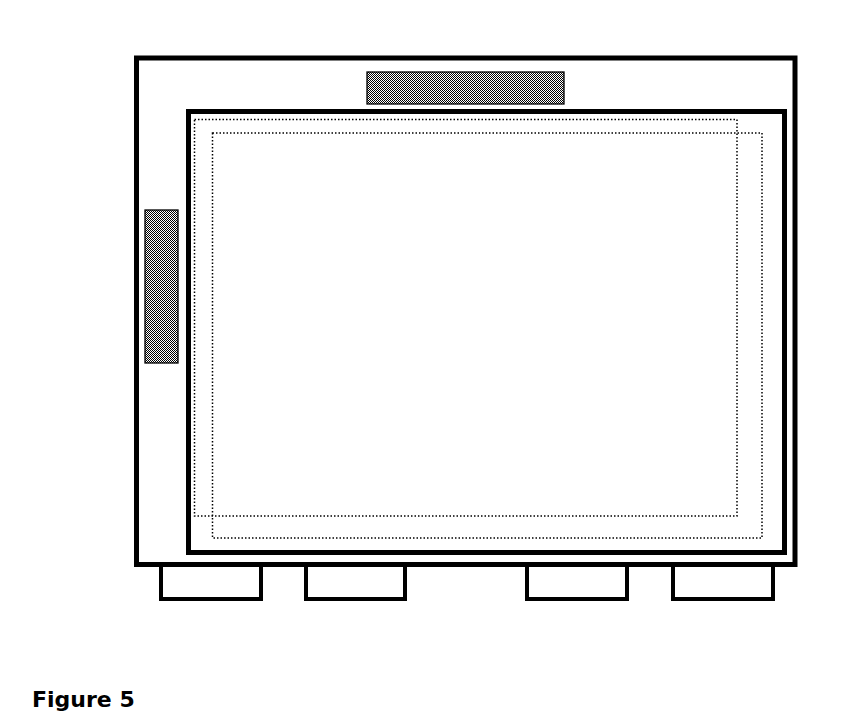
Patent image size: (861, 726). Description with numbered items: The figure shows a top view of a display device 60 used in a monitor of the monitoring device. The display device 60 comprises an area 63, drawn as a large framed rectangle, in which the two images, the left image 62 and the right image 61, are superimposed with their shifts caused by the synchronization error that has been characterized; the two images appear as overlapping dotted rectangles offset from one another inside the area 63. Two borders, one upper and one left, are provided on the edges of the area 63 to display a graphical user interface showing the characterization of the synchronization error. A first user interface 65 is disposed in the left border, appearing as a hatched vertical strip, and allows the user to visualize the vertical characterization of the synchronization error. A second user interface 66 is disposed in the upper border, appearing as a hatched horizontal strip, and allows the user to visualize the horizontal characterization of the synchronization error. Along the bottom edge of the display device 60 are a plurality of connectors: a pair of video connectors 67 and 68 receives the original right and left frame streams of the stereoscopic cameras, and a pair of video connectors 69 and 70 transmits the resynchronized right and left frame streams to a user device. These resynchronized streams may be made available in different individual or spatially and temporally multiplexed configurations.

The display device 60 is at (133, 120).
The right image 61 is at (327, 133).
The left image 62 is at (452, 120).
The area 63 is at (255, 110).
The first user interface 65 is at (163, 208).
The second user interface 66 is at (564, 90).
The video connector 67 is at (191, 601).
The video connector 68 is at (337, 603).
The video connector 69 is at (588, 606).
The video connector 70 is at (713, 605).